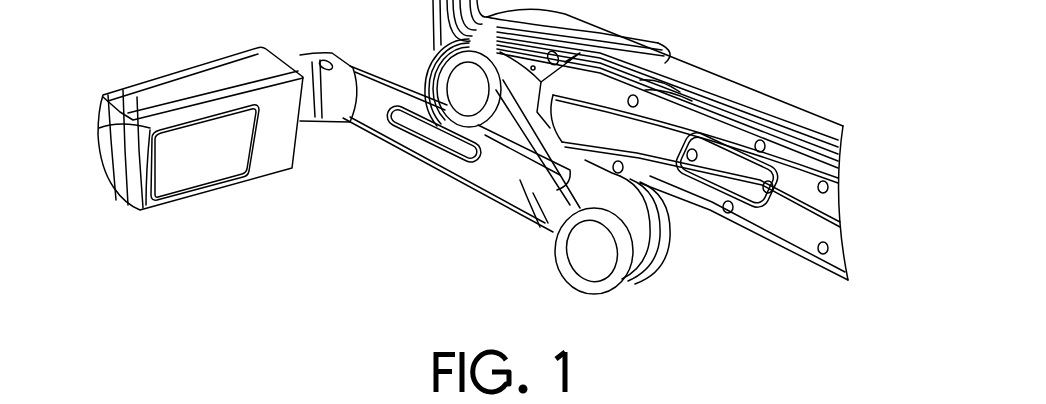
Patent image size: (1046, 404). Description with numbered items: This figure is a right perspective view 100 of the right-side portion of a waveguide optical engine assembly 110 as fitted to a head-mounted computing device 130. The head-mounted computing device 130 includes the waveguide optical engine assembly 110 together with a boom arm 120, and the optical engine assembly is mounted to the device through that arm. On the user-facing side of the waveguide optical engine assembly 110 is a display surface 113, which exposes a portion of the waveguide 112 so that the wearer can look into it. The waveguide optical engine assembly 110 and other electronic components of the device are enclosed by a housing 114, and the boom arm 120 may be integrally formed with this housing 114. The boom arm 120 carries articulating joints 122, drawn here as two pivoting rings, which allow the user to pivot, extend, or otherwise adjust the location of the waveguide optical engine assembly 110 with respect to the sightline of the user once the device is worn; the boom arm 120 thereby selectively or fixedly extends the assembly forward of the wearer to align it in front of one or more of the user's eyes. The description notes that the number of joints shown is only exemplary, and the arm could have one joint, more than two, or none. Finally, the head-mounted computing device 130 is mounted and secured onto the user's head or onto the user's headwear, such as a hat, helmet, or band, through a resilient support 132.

The right perspective view 100 is at (486, 181).
The waveguide optical engine assembly 110 is at (203, 129).
The waveguide 112 is at (205, 180).
The display surface 113 is at (201, 149).
The housing 114 is at (117, 202).
The boom arm 120 is at (414, 168).
The articulating joints 122 is at (470, 84).
The head-mounted computing device 130 is at (677, 140).
The resilient support 132 is at (820, 217).